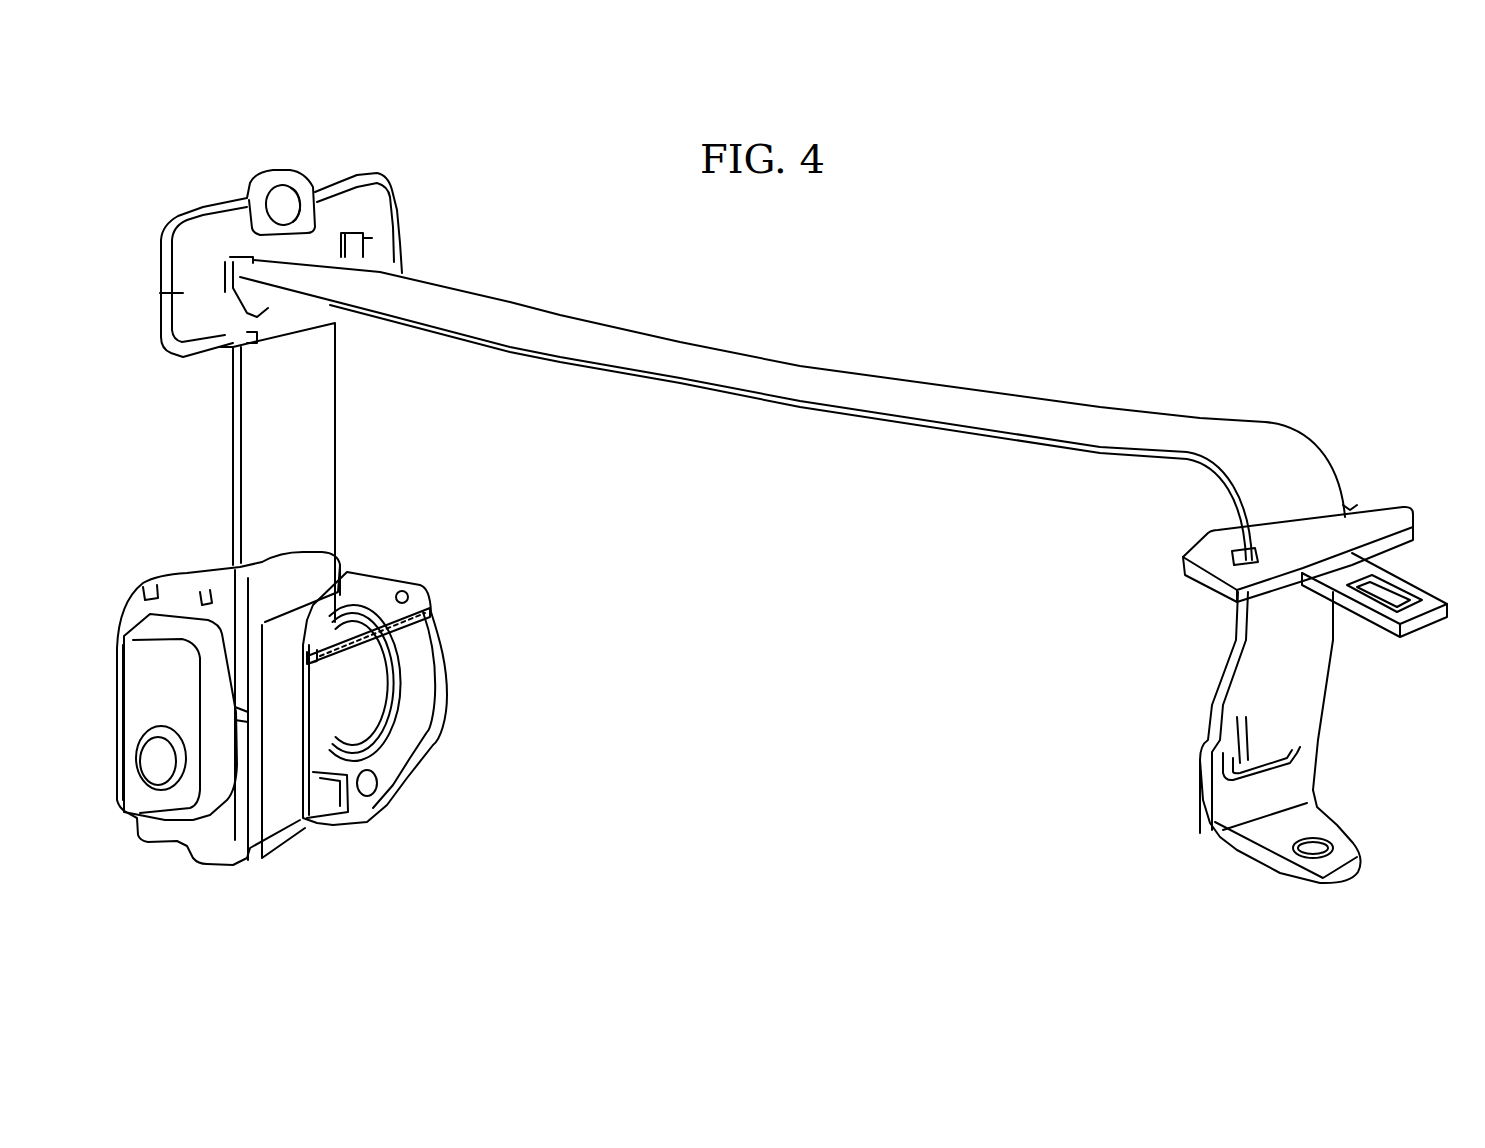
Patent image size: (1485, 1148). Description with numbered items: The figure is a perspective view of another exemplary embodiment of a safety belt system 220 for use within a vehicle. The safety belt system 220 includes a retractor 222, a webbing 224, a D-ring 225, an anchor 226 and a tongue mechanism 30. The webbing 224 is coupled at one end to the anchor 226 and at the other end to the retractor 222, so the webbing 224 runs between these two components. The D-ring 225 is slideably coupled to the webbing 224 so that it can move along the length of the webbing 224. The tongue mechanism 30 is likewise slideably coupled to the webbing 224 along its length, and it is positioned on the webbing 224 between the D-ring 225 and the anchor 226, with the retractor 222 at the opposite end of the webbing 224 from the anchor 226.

The safety belt system 220 is at (819, 619).
The retractor 222 is at (363, 705).
The webbing 224 is at (973, 400).
The D-ring 225 is at (386, 170).
The anchor 226 is at (1307, 765).
The tongue mechanism 30 is at (1388, 518).